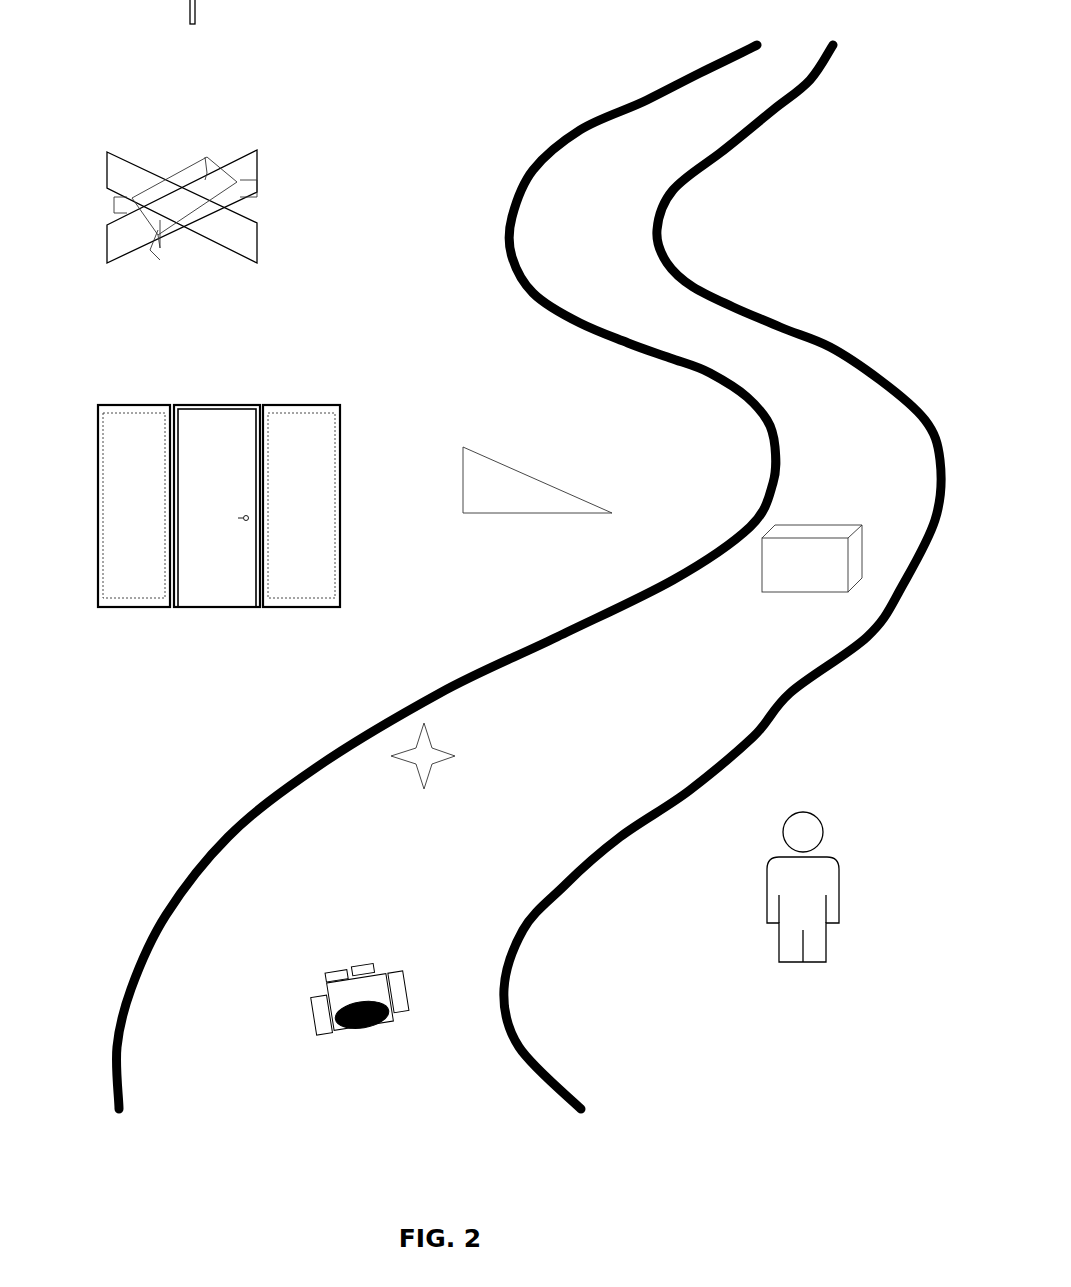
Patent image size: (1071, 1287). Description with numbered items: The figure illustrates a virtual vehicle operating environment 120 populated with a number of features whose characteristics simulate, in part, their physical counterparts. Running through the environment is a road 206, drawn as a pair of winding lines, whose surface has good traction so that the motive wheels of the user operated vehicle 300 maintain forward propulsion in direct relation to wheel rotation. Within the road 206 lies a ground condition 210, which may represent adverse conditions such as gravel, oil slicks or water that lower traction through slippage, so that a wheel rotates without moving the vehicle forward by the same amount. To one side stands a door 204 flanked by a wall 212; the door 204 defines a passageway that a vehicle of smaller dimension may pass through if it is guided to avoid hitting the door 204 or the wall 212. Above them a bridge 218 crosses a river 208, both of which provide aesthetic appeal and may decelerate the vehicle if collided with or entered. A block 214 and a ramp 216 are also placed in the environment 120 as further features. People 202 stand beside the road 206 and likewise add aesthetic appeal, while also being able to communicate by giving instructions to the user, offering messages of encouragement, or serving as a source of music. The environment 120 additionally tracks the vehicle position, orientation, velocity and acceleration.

The virtual vehicle operating environment 120 is at (441, 118).
The people 202 is at (846, 845).
The door 204 is at (211, 390).
The road 206 is at (301, 822).
The river 208 is at (177, 164).
The ground condition 210 is at (404, 732).
The wall 212 is at (130, 581).
The block 214 is at (773, 559).
The ramp 216 is at (513, 452).
The bridge 218 is at (104, 160).
The user operated vehicle 300 is at (332, 993).